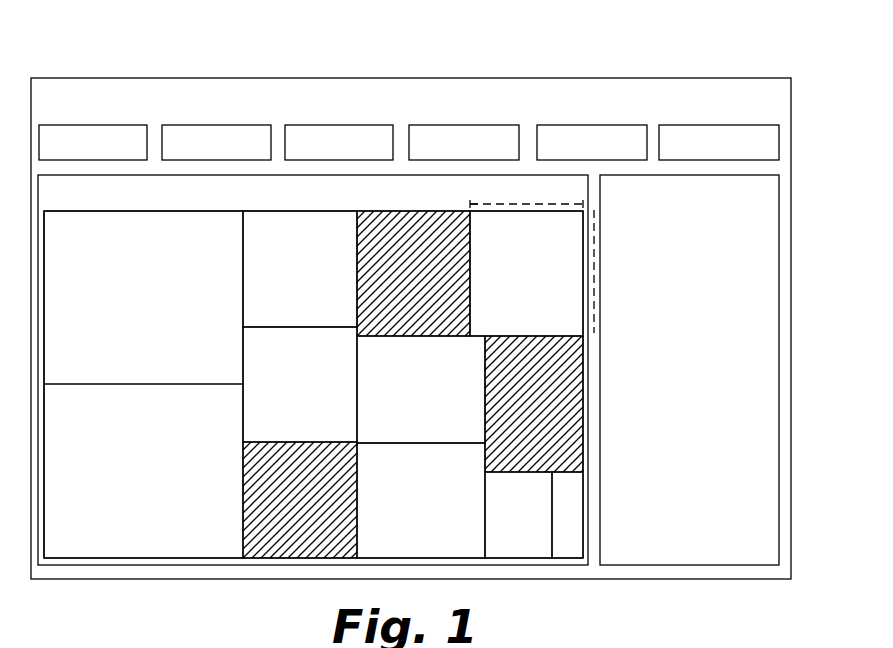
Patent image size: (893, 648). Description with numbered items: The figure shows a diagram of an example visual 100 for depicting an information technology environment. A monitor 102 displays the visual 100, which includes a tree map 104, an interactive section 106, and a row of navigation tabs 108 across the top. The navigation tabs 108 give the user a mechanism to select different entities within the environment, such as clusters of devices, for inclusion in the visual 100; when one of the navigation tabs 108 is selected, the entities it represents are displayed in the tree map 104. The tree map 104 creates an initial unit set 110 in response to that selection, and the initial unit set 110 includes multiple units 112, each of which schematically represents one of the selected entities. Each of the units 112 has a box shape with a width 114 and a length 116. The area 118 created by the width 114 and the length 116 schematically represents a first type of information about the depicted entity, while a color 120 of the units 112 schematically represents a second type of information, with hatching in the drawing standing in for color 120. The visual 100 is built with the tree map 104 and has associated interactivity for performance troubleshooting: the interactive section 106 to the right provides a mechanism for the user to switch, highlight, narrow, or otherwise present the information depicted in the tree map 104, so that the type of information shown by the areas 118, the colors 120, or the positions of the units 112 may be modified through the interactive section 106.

The visual 100 is at (113, 70).
The monitor 102 is at (411, 328).
The tree map 104 is at (313, 370).
The interactive section 106 is at (689, 370).
The navigation tabs 108 is at (647, 120).
The initial unit set 110 is at (104, 568).
The units 112 is at (193, 511).
The width 114 is at (530, 203).
The length 116 is at (596, 276).
The area 118 is at (526, 273).
The color 120 is at (558, 446).